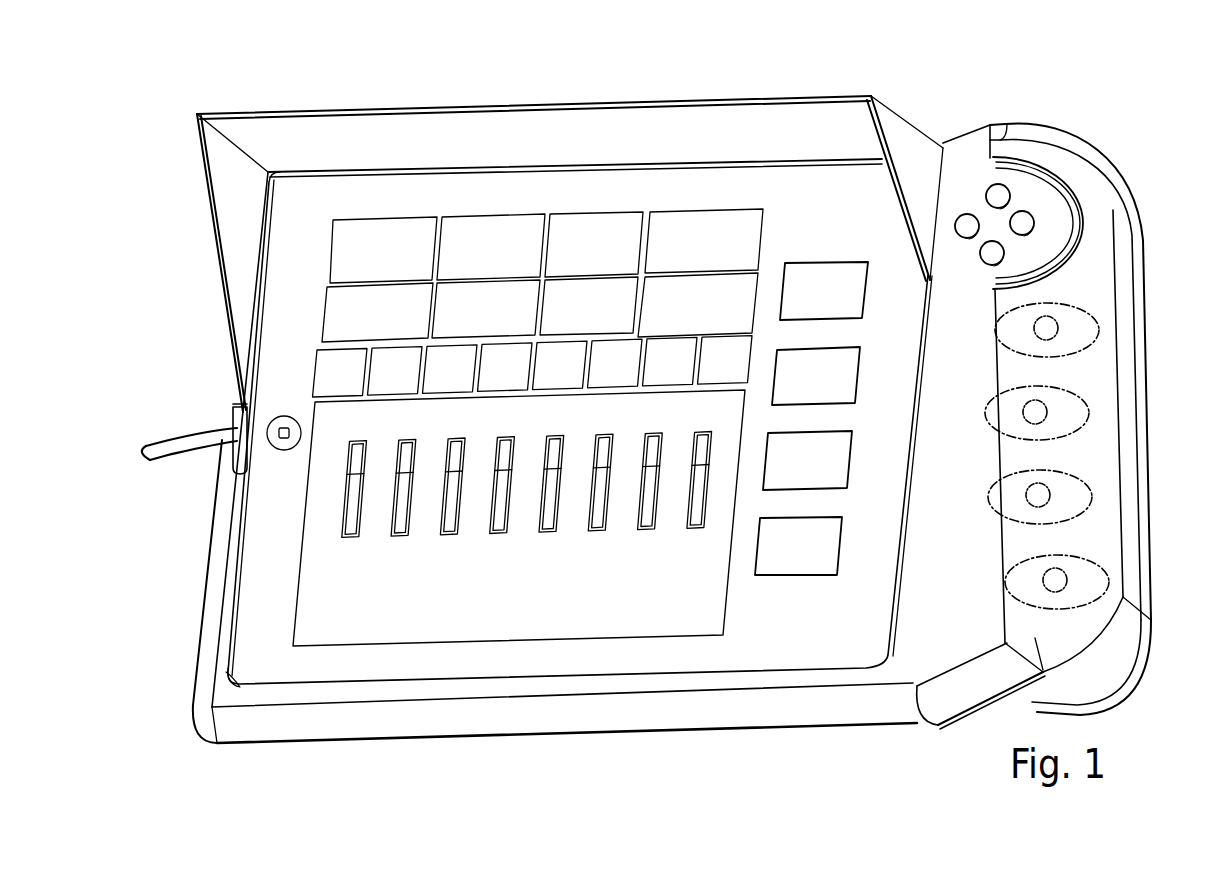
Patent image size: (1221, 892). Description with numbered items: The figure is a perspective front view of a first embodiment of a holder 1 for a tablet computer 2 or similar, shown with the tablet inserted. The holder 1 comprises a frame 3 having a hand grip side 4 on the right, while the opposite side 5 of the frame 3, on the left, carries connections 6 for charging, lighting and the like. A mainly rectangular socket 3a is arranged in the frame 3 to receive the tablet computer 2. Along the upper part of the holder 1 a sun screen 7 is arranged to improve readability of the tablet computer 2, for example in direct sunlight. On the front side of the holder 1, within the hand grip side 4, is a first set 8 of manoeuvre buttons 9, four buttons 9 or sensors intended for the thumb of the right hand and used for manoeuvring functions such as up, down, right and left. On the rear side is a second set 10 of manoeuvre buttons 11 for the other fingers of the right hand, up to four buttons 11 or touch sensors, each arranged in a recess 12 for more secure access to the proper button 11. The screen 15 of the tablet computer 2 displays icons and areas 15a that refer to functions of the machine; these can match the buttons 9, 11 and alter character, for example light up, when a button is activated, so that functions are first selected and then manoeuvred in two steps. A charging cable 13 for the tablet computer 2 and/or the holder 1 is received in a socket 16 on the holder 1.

The holder 1 is at (964, 128).
The tablet computer 2 is at (767, 660).
The frame 3 is at (460, 722).
The socket 3a is at (240, 686).
The hand grip side 4 is at (1133, 525).
The opposite side 5 is at (205, 618).
The connections 6 is at (240, 478).
The sun screen 7 is at (538, 120).
The first set of manoeuvre buttons 8 is at (1022, 186).
The manoeuvre button 9 is at (1030, 214).
The second set of manoeuvre buttons 10 is at (1098, 378).
The manoeuvre button 11 is at (1040, 500).
The recess 12 is at (1078, 418).
The charging cable 13 is at (176, 436).
The screen 15 is at (810, 183).
The icons and areas 15a is at (598, 230).
The socket 16 is at (233, 416).